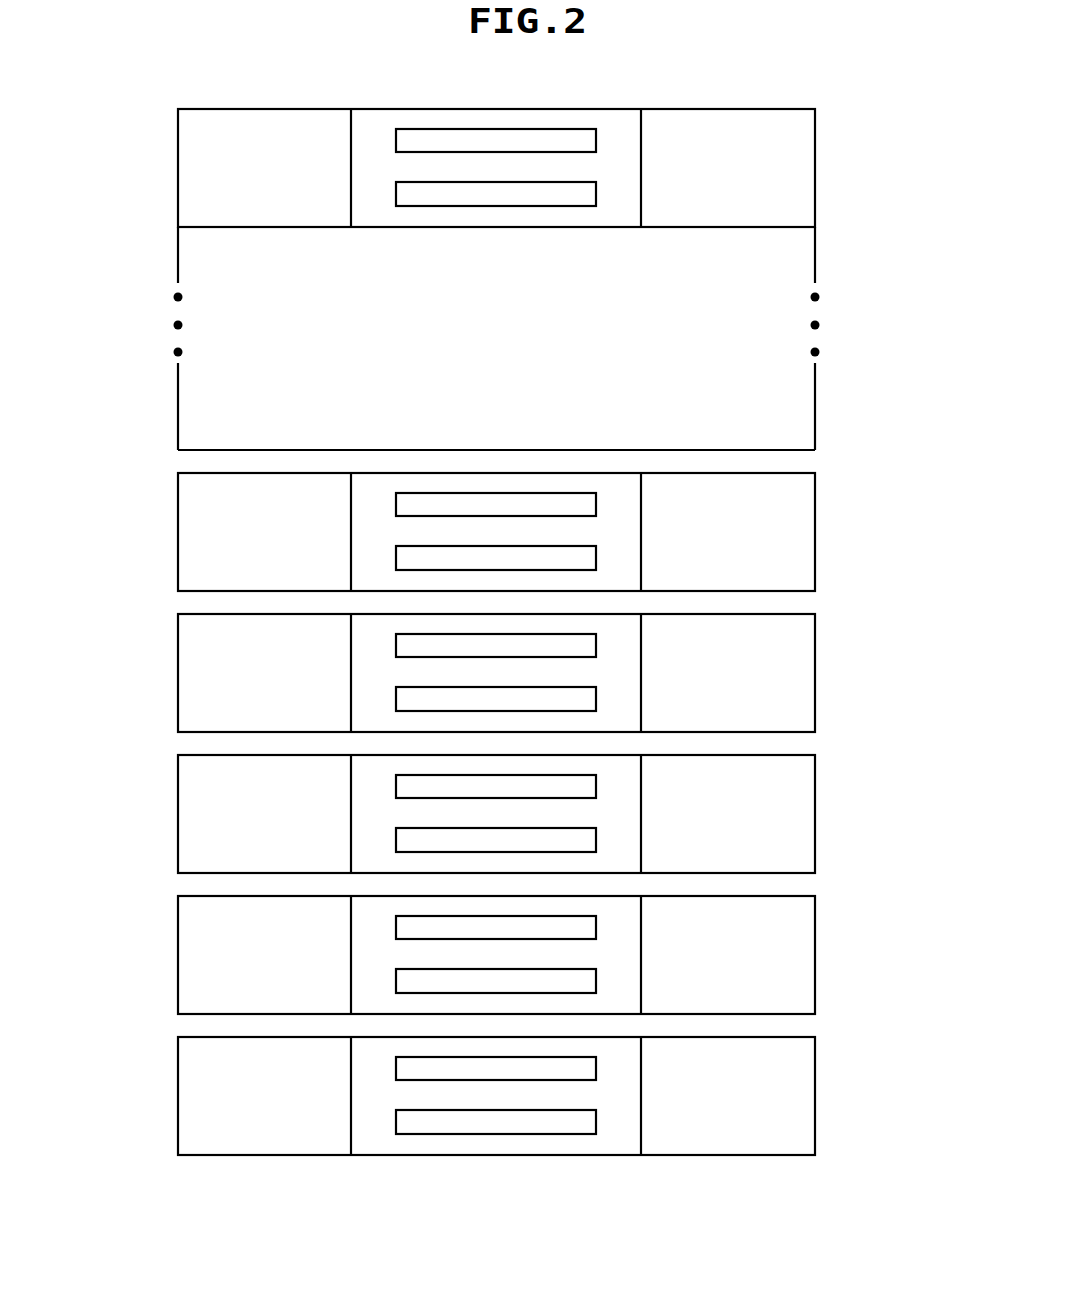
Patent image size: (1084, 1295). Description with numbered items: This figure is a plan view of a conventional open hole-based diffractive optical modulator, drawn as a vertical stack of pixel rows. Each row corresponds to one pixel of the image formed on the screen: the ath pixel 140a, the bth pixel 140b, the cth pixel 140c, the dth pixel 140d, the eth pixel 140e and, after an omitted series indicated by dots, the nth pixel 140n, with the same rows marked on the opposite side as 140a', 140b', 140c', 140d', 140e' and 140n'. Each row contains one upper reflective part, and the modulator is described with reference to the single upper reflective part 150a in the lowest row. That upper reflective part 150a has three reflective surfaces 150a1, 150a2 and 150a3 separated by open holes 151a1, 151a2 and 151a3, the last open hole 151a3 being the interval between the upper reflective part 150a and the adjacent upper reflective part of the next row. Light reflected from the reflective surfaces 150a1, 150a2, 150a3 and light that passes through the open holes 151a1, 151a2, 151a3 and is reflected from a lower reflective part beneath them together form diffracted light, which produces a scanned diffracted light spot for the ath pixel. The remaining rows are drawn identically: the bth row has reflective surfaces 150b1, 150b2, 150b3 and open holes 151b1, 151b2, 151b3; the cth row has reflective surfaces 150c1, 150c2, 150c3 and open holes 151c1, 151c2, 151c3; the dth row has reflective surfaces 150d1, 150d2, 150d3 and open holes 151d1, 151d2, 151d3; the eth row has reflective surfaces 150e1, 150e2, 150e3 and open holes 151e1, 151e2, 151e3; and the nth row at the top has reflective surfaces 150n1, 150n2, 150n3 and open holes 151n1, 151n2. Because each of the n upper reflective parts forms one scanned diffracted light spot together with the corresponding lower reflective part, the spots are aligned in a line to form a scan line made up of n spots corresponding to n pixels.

The pixel a 140a is at (428, 1096).
The pixel b 140b is at (428, 955).
The pixel c 140c is at (428, 814).
The pixel d 140d is at (428, 673).
The pixel e 140e is at (428, 532).
The pixel n 140n is at (428, 168).
The pixel a region 140a' is at (790, 1096).
The pixel b region 140b' is at (790, 955).
The pixel c region 140c' is at (789, 814).
The pixel d region 140d' is at (790, 673).
The pixel e region 140e' is at (790, 532).
The pixel n region 140n' is at (790, 168).
The upper reflective part 150a is at (605, 1166).
The reflective surface 150a1 is at (500, 1144).
The reflective surface 150a2 is at (500, 1094).
The reflective surface 150a3 is at (500, 1045).
The open hole 151a1 is at (496, 1121).
The open hole 151a2 is at (496, 1069).
The open hole 151a3 is at (496, 1026).
The first organic layer of pixel b 150b1 is at (500, 1003).
The second organic layer of pixel b 150b2 is at (500, 953).
The third organic layer of pixel b 150b3 is at (500, 904).
The first electrode of pixel b 151b1 is at (496, 980).
The second electrode of pixel b 151b2 is at (496, 928).
The third electrode of pixel b 151b3 is at (496, 885).
The first organic layer of pixel c 150c1 is at (500, 862).
The second organic layer of pixel c 150c2 is at (500, 812).
The third organic layer of pixel c 150c3 is at (500, 763).
The first electrode of pixel c 151c1 is at (496, 839).
The second electrode of pixel c 151c2 is at (496, 787).
The third electrode of pixel c 151c3 is at (496, 744).
The first organic layer of pixel d 150d1 is at (500, 721).
The second organic layer of pixel d 150d2 is at (500, 671).
The third organic layer of pixel d 150d3 is at (500, 622).
The first electrode of pixel d 151d1 is at (496, 698).
The second electrode of pixel d 151d2 is at (496, 646).
The third electrode of pixel d 151d3 is at (496, 603).
The first organic layer of pixel e 150e1 is at (500, 580).
The second organic layer of pixel e 150e2 is at (500, 530).
The third organic layer of pixel e 150e3 is at (500, 481).
The first electrode of pixel e 151e1 is at (496, 557).
The second electrode of pixel e 151e2 is at (496, 505).
The third electrode of pixel e 151e3 is at (496, 462).
The first organic layer of pixel n 150n1 is at (500, 216).
The second organic layer of pixel n 150n2 is at (500, 166).
The third organic layer of pixel n 150n3 is at (500, 117).
The first electrode of pixel n 151n1 is at (496, 193).
The second electrode of pixel n 151n2 is at (496, 141).